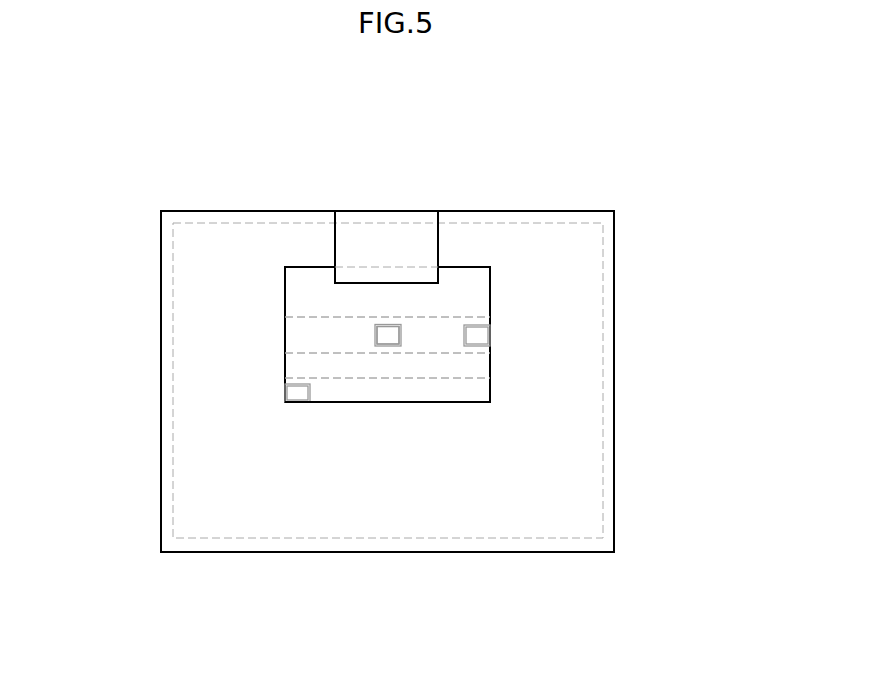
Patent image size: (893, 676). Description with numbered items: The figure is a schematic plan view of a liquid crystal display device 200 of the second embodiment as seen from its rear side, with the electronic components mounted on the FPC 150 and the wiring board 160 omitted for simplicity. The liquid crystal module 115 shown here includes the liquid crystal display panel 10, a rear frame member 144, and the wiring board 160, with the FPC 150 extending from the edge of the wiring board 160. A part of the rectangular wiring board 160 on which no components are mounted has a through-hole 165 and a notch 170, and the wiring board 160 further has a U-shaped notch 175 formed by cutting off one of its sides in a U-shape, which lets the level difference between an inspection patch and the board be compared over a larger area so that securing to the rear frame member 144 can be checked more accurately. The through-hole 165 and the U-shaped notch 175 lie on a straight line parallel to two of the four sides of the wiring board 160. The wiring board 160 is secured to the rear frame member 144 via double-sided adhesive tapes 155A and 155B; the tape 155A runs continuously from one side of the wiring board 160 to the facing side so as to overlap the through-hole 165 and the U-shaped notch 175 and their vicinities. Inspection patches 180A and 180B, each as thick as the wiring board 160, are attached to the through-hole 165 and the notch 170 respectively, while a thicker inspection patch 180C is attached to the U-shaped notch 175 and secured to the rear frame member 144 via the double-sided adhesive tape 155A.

The liquid crystal display device 200 is at (682, 143).
The liquid crystal display panel 10 is at (603, 297).
The liquid crystal module 115 is at (161, 445).
The rear frame member 144 is at (614, 515).
The FPC 150 is at (423, 245).
The wiring board 160 is at (285, 363).
The double-sided adhesive tape 155A is at (295, 337).
The double-sided adhesive tape 155B is at (402, 374).
The through-hole 165 is at (375, 330).
The notch 170 is at (310, 386).
The U-shaped notch 175 is at (466, 332).
The inspection patch 180A is at (387, 336).
The inspection patch 180B is at (297, 392).
The inspection patch 180C is at (477, 335).